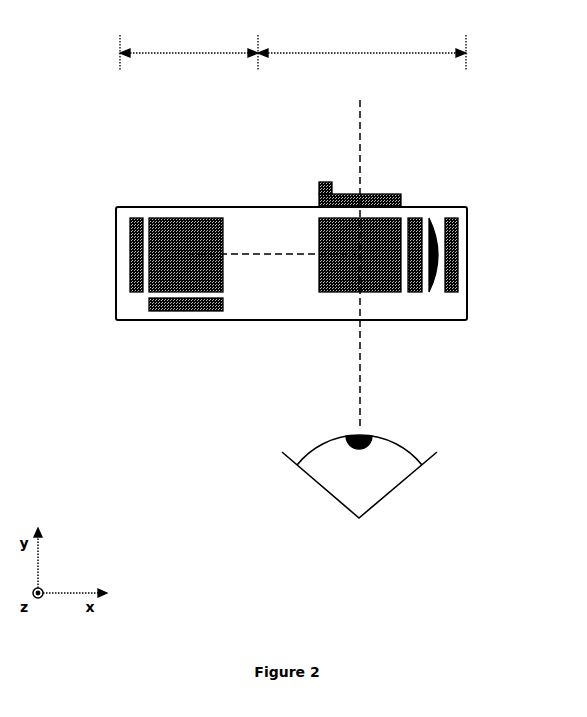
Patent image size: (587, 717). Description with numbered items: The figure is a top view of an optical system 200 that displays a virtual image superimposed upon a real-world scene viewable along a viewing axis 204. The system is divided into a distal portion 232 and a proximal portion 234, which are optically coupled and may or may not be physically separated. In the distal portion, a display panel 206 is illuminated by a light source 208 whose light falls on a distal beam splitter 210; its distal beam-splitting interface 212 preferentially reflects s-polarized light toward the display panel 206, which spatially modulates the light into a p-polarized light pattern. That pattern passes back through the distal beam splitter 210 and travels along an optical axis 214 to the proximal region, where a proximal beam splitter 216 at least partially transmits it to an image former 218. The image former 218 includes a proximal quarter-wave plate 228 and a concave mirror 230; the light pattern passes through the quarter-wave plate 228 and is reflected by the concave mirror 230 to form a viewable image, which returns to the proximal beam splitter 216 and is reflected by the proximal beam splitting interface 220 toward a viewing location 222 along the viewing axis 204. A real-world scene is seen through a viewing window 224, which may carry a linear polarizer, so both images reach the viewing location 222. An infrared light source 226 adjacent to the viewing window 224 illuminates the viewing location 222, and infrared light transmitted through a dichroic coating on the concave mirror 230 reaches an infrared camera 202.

The optical system 200 is at (187, 420).
The infrared camera 202 is at (460, 235).
The viewing axis 204 is at (362, 140).
The display panel 206 is at (130, 270).
The light source 208 is at (180, 312).
The distal beam splitter 210 is at (147, 292).
The distal beam-splitting interface 212 is at (167, 237).
The optical axis 214 is at (243, 253).
The proximal beam splitter 216 is at (380, 293).
The image former 218 is at (432, 240).
The proximal beam splitting interface 220 is at (375, 238).
The viewing location 222 is at (388, 493).
The viewing window 224 is at (348, 192).
The infrared light source 226 is at (319, 182).
The proximal quarter-wave plate 228 is at (416, 293).
The concave mirror 230 is at (437, 293).
The distal portion 232 is at (189, 52).
The proximal portion 234 is at (362, 52).